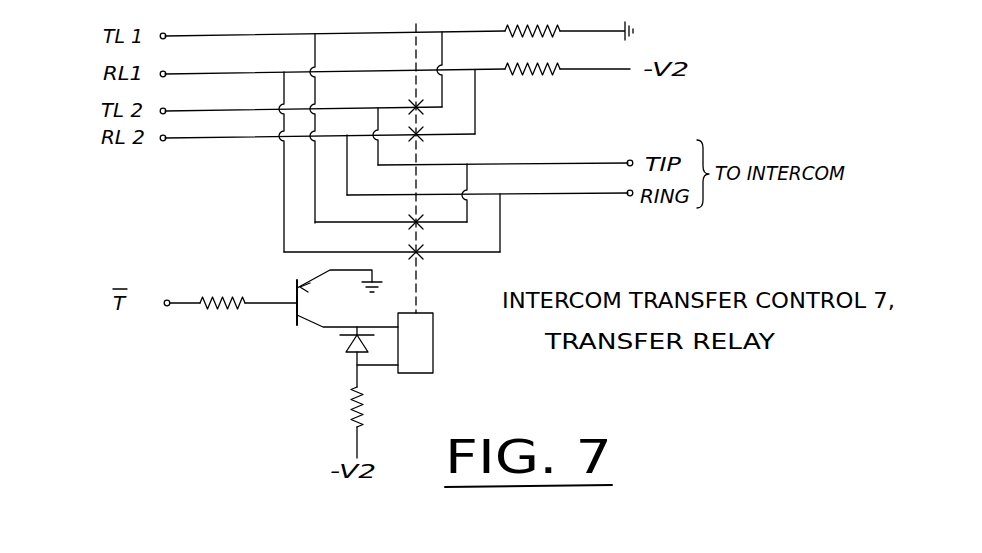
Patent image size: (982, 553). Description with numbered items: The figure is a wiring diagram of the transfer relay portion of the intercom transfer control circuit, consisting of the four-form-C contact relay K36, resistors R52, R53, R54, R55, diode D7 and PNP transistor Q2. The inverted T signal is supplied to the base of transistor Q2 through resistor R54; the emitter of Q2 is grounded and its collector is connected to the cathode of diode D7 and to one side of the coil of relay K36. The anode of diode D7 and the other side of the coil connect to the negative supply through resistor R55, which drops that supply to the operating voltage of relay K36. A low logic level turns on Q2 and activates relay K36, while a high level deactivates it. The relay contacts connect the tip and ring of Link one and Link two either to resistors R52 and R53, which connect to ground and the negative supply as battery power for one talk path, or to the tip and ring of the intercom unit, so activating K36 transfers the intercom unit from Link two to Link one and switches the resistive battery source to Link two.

The resistor R52 is at (569, 20).
The resistor R53 is at (565, 84).
The resistor R54 is at (248, 291).
The resistor R55 is at (383, 422).
The PNP transistor Q2 is at (347, 298).
The diode D7 is at (343, 357).
The four-form-C contact relay K36 is at (415, 343).